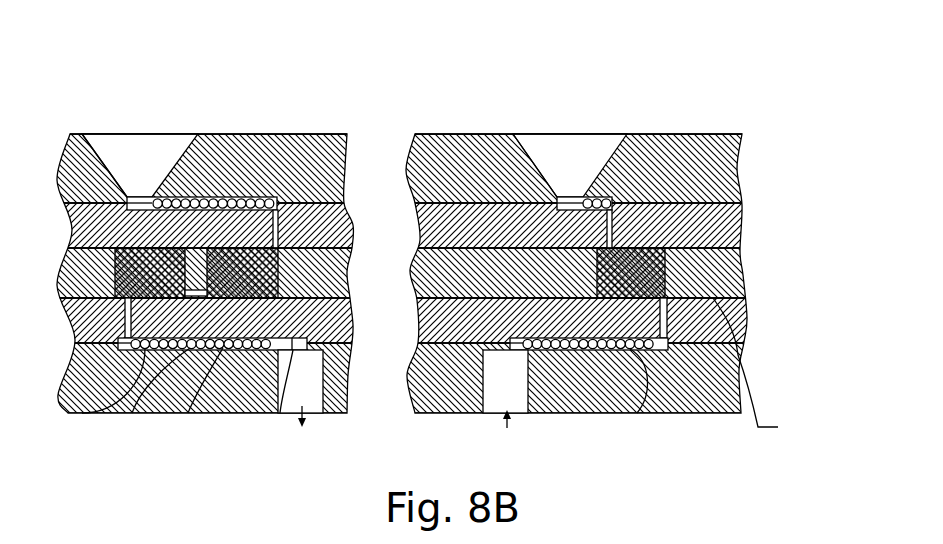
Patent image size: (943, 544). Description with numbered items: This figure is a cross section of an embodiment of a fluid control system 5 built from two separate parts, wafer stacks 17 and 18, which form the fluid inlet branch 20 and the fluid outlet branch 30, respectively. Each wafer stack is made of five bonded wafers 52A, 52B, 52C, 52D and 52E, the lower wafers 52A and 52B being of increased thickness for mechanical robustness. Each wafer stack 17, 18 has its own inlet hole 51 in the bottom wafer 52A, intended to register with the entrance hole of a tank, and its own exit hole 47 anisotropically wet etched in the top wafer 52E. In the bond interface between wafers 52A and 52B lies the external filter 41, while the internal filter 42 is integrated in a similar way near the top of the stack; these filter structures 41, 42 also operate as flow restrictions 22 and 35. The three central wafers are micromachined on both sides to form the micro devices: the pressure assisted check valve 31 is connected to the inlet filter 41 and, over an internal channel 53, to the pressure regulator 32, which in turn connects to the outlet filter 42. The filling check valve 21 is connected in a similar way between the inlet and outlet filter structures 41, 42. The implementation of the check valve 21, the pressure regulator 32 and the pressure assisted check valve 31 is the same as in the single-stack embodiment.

The fluid control system 5 is at (429, 104).
The exit hole 47 is at (117, 142).
The fluid outlet branch 30 is at (148, 173).
The wafer stack 17 is at (213, 133).
The internal filter 42 is at (369, 171).
The flow restriction 35 is at (255, 193).
The wafer 52E is at (312, 184).
The wafer 52D is at (322, 234).
The wafer 52C is at (310, 282).
The wafer 52B is at (327, 330).
The wafer 52A is at (337, 392).
The pressure assisted check valve 31 is at (82, 413).
The internal channel 53 is at (132, 413).
The external filter 41 is at (410, 396).
The flow restriction 22 is at (188, 413).
The pressure regulator 32 is at (280, 413).
The inlet hole 51 is at (313, 400).
The fluid inlet branch 20 is at (588, 157).
The wafer stack 18 is at (673, 133).
The filling check valve 21 is at (761, 369).